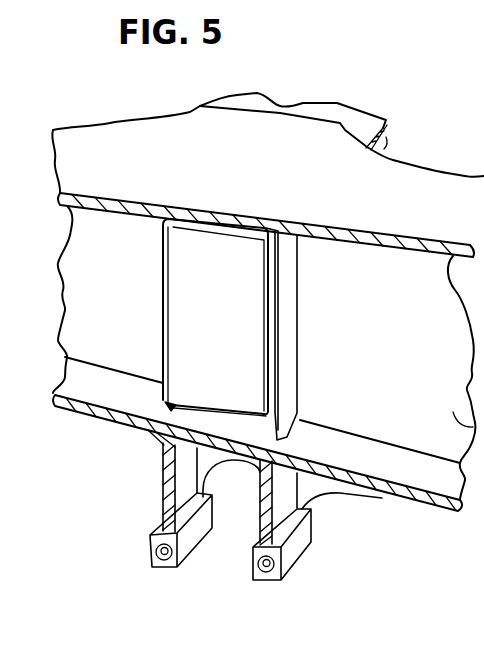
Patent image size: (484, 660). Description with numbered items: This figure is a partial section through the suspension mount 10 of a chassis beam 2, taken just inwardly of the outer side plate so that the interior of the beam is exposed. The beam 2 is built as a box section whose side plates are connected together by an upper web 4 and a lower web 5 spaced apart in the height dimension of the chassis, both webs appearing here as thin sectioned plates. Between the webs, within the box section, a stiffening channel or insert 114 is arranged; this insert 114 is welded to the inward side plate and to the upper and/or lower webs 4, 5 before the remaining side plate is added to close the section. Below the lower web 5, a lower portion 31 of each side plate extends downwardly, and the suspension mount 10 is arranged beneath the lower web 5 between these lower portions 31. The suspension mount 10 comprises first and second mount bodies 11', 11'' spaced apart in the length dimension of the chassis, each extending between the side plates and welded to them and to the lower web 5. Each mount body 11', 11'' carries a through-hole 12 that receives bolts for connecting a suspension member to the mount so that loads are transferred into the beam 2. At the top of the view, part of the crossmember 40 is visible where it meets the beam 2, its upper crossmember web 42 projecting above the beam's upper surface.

The beam 2 is at (444, 162).
The upper web 4 is at (380, 247).
The lower web 5 is at (378, 455).
The suspension mount 10 is at (244, 528).
The first mount body 11' is at (152, 481).
The second mount body 11'' is at (258, 502).
The through-hole 12 is at (163, 561).
The lower portion of side plate 31 is at (324, 494).
The crossmember 40 is at (392, 117).
The upper crossmember web 42 is at (340, 110).
The stiffening insert 114 is at (283, 333).